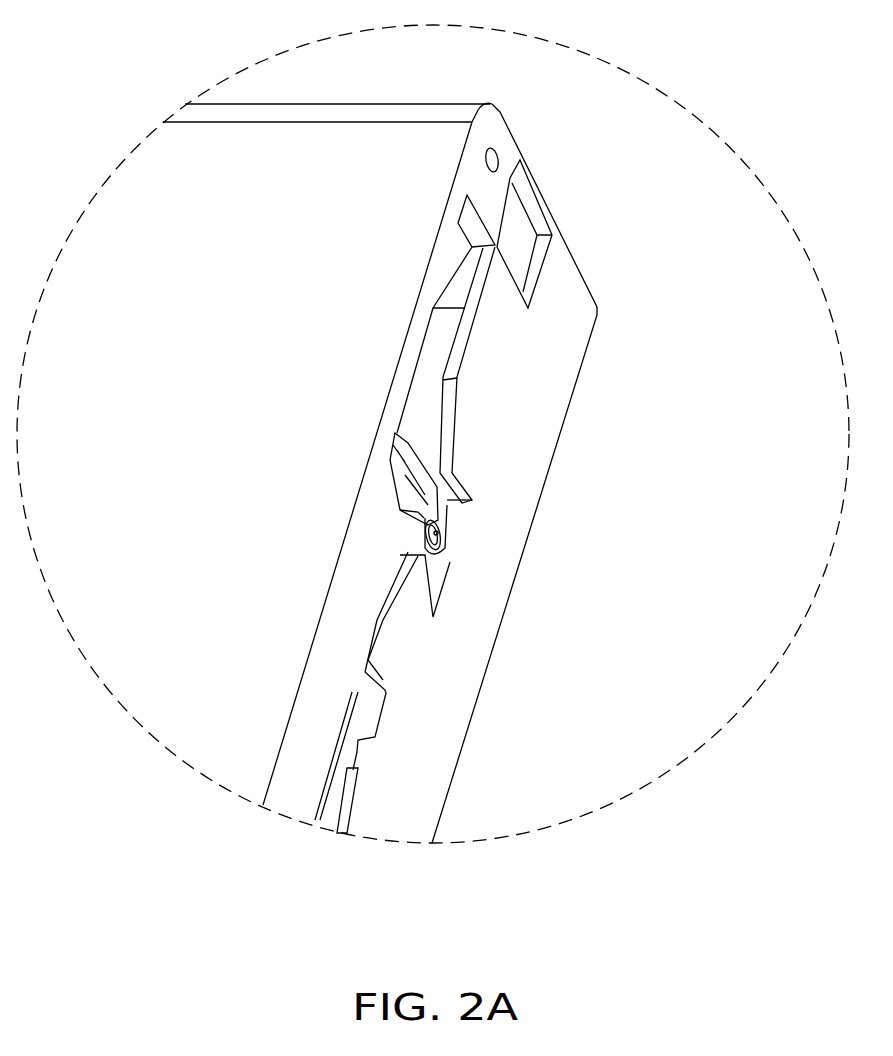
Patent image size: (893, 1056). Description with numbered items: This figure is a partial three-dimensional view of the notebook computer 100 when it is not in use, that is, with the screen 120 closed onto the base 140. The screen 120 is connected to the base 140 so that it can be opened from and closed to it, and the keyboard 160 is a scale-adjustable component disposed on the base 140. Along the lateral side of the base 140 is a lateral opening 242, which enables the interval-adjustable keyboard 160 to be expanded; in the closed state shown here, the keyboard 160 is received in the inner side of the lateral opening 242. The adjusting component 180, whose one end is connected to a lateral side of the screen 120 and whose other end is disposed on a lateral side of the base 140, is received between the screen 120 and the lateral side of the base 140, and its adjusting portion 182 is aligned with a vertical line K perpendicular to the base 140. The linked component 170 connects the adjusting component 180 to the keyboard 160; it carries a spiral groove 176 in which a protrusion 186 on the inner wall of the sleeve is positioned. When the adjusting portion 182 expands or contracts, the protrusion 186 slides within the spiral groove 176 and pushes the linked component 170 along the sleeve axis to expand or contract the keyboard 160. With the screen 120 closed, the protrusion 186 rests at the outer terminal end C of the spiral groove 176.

The notebook computer 100 is at (853, 56).
The screen 120 is at (160, 167).
The base 140 is at (565, 282).
The vertical line K is at (505, 680).
The adjusting component 180 is at (422, 508).
The adjusting portion 182 is at (420, 530).
The protrusion 186 is at (443, 513).
The spiral groove 176 is at (447, 543).
The outer terminal end C is at (453, 535).
The linked component 170 is at (447, 550).
The lateral opening 242 is at (392, 712).
The keyboard 160 is at (335, 793).